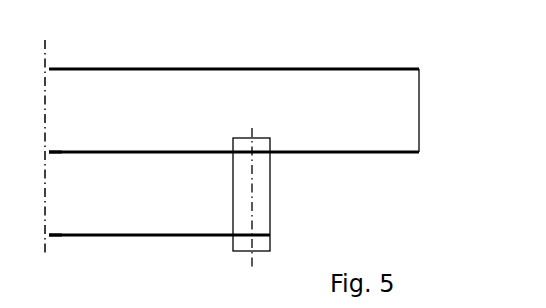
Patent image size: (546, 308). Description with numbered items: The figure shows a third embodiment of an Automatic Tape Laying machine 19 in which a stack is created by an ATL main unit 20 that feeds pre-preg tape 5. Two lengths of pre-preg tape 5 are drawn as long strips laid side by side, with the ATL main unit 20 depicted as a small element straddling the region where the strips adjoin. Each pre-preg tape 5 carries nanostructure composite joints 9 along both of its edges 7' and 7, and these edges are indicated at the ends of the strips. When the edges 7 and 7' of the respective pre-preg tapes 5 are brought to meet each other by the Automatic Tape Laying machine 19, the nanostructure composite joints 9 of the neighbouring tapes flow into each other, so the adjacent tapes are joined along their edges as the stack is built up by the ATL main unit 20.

The pre-preg tape 5 is at (234, 152).
The edge 7 is at (416, 150).
The edge 7' is at (79, 191).
The nanostructure composite joint 9 is at (193, 68).
The Automatic Tape Laying machine 19 is at (501, 228).
The ATL main unit 20 is at (280, 194).